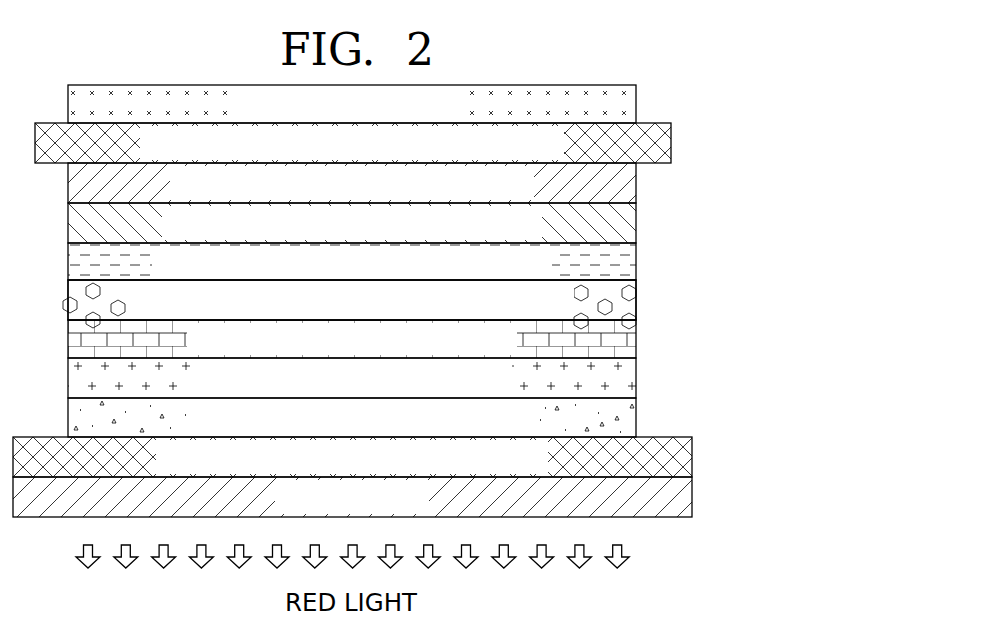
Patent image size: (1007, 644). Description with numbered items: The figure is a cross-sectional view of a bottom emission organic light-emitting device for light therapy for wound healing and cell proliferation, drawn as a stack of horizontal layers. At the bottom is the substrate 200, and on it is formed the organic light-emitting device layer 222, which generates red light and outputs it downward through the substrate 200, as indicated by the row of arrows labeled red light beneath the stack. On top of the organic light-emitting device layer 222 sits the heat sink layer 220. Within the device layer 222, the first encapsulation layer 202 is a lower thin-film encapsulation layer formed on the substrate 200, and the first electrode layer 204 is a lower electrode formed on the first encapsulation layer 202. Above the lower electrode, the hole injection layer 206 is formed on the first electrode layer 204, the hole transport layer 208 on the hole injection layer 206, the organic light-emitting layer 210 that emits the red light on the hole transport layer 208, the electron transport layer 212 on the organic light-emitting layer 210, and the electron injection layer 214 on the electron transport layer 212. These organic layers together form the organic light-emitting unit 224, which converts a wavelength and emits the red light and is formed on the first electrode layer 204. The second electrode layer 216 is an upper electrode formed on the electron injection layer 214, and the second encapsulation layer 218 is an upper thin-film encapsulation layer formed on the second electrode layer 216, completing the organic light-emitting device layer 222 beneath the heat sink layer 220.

The substrate 200 is at (693, 497).
The first encapsulation layer 202 is at (693, 455).
The first electrode layer 204 is at (637, 418).
The hole injection layer 206 is at (637, 378).
The hole transport layer 208 is at (637, 340).
The organic light-emitting layer 210 is at (637, 302).
The electron transport layer 212 is at (637, 263).
The electron injection layer 214 is at (637, 223).
The second electrode layer 216 is at (637, 183).
The second encapsulation layer 218 is at (672, 143).
The heat sink layer 220 is at (637, 103).
The organic light-emitting device layer 222 is at (795, 143).
The organic light-emitting unit 224 is at (722, 223).